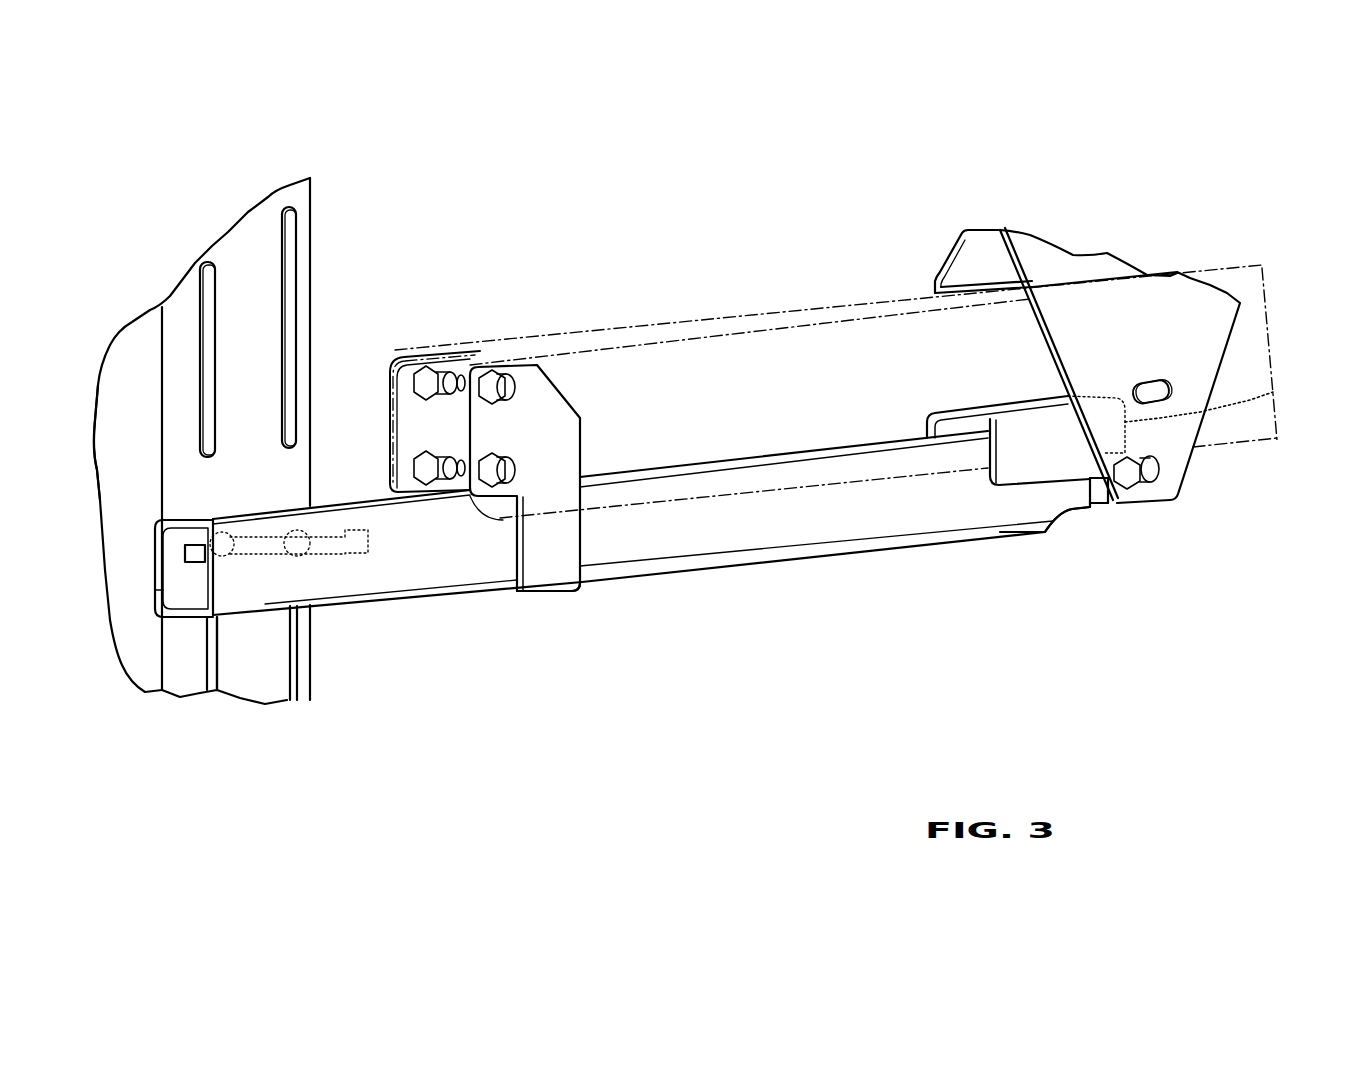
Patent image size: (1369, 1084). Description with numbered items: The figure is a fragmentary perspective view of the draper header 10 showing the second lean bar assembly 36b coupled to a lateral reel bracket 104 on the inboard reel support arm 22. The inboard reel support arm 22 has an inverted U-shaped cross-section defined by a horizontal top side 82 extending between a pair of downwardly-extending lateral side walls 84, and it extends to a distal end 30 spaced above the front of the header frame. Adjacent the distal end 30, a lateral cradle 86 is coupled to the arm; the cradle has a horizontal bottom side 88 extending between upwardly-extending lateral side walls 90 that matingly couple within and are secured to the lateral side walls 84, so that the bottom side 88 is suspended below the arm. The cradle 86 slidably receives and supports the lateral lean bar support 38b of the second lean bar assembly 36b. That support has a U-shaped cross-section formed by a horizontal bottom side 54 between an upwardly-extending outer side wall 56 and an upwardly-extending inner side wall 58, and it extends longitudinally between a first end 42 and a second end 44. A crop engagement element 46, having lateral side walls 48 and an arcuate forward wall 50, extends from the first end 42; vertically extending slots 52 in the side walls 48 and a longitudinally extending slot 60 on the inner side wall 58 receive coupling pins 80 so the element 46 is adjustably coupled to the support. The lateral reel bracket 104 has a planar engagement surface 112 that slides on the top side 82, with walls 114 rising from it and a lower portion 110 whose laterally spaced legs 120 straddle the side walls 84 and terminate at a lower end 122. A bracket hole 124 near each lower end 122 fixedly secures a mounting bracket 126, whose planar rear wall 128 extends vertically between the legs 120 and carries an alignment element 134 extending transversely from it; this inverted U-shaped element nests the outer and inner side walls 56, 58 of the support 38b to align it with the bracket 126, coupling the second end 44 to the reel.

The draper header 10 is at (706, 472).
The inboard reel support arm 22 is at (578, 600).
The distal end 30 is at (397, 352).
The second lean bar assembly 36b is at (229, 724).
The lateral lean bar support 38b is at (333, 586).
The first end 42 is at (237, 592).
The second end 44 is at (1003, 515).
The crop engagement element 46 is at (188, 477).
The lateral side walls 48 is at (247, 243).
The arcuate forward wall 50 is at (135, 333).
The vertically extending slots 52 is at (200, 262).
The horizontal bottom side 54 is at (178, 586).
The outer side wall 56 is at (212, 582).
The inner side wall 58 is at (158, 584).
The longitudinally extending slot 60 is at (190, 545).
The coupling pins 80 is at (193, 547).
The horizontal top side 82 is at (530, 347).
The lateral side walls 84 is at (836, 384).
The lateral cradle 86 is at (536, 614).
The horizontal bottom side 88 is at (558, 590).
The lateral side walls 90 is at (525, 537).
The lateral reel bracket 104 is at (1088, 412).
The lower portion 110 is at (1140, 412).
The engagement surface 112 is at (977, 290).
The walls 114 is at (1058, 260).
The legs 120 is at (1136, 387).
The lower end 122 is at (1196, 458).
The bracket hole 124 is at (1198, 464).
The mounting bracket 126 is at (1103, 505).
The rear wall 128 is at (1273, 393).
The alignment element 134 is at (1026, 440).